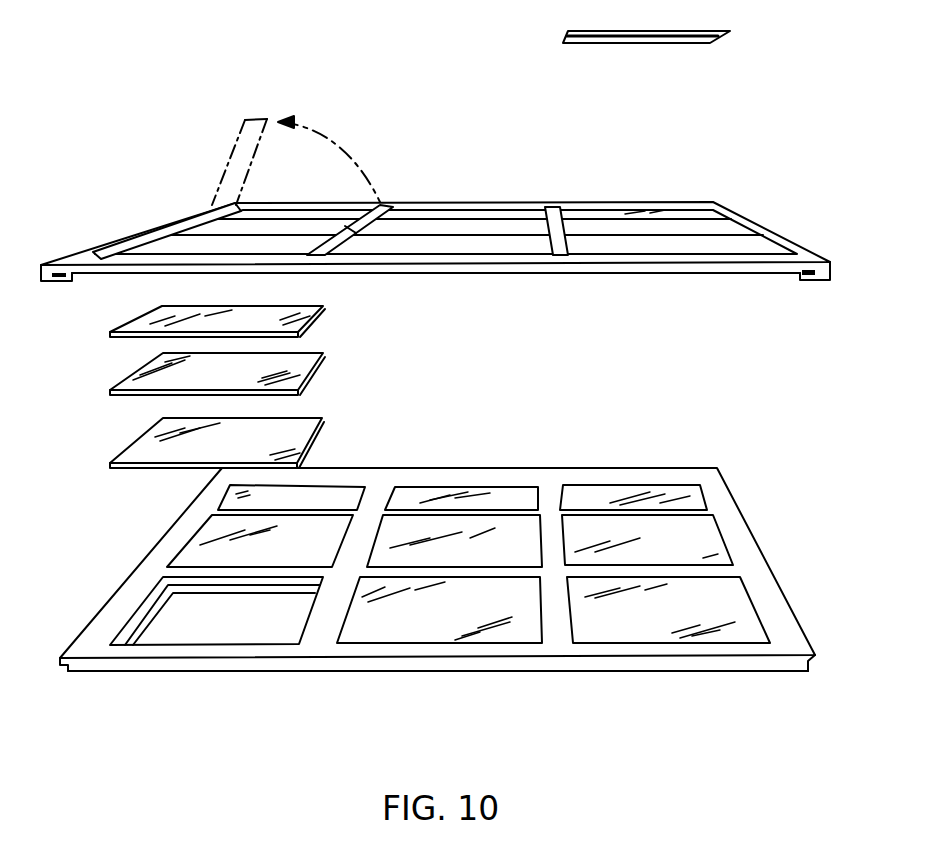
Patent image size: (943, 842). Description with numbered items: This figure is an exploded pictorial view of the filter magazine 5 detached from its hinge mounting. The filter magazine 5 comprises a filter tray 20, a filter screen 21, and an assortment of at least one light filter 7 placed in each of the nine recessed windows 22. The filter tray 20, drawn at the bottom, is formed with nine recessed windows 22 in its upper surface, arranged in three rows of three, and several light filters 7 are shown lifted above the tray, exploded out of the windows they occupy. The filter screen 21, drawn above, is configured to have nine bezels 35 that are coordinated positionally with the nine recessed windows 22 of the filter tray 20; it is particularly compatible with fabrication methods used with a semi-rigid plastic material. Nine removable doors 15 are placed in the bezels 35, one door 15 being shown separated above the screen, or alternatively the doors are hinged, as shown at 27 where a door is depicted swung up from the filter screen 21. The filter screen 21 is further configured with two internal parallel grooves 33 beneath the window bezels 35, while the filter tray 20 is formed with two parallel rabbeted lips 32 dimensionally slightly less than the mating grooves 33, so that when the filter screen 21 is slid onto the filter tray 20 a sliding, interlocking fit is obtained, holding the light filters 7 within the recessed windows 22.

The filter magazine 5 is at (609, 690).
The light filter 7 is at (325, 538).
The removable door 15 is at (690, 43).
The filter tray 20 is at (362, 673).
The filter screen 21 is at (750, 270).
The recessed window 22 is at (135, 625).
The hinged door 27 is at (230, 153).
The rabbeted lip 32 is at (813, 667).
The groove 33 is at (55, 282).
The bezel 35 is at (610, 208).